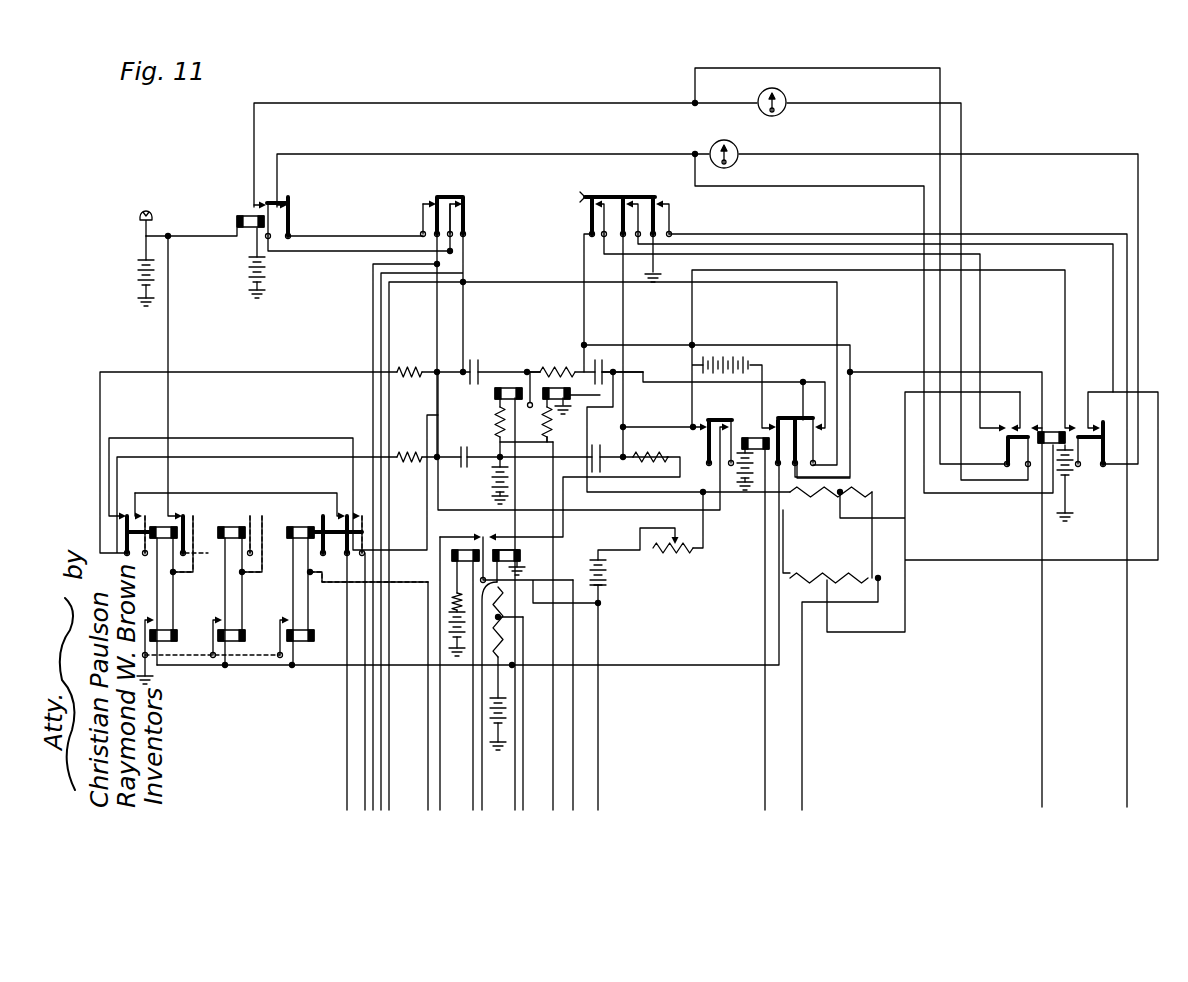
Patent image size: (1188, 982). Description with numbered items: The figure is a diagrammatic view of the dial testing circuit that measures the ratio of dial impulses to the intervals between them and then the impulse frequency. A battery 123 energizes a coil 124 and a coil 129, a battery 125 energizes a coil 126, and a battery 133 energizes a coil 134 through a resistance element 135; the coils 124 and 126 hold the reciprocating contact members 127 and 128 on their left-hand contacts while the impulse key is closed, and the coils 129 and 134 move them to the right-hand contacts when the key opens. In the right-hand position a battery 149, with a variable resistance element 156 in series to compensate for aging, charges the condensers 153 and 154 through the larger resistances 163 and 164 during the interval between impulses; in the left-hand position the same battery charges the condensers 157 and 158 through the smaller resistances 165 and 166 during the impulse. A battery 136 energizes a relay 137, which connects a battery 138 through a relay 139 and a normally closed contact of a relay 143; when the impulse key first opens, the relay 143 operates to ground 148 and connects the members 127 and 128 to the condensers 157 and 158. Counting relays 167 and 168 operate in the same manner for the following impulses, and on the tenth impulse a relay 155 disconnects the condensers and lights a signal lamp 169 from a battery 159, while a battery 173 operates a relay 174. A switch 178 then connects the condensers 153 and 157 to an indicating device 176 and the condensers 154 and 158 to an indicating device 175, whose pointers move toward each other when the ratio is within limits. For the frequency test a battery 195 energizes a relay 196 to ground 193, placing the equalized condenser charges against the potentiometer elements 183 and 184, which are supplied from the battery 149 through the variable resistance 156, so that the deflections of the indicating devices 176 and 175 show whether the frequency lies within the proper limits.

The signal lamp 169 is at (147, 207).
The battery 159 is at (140, 268).
The relay 174 is at (238, 216).
The battery 173 is at (250, 268).
The indicating device 176 is at (788, 98).
The indicating device 175 is at (713, 145).
The switch 178 is at (510, 200).
The ground 193 is at (658, 280).
The resistance 165 is at (400, 368).
The resistance 166 is at (400, 452).
The coil 124 is at (437, 390).
The reciprocating contact member 127 is at (533, 360).
The condenser 157 is at (477, 365).
The resistance 163 is at (593, 368).
The condenser 153 is at (615, 350).
The battery 138 is at (740, 352).
The coil 129 is at (600, 396).
The relay 137 is at (757, 436).
The battery 136 is at (752, 480).
The condenser 158 is at (475, 447).
The condenser 154 is at (605, 455).
The resistance 164 is at (648, 462).
The battery 123 is at (495, 484).
The relay 155 is at (163, 527).
The relay 168 is at (231, 527).
The relay 143 is at (300, 540).
The coil 126 is at (472, 527).
The reciprocating contact member 128 is at (505, 548).
The coil 134 is at (512, 552).
The variable resistance element 156 is at (685, 552).
The battery 149 is at (606, 580).
The potentiometer element 183 is at (806, 498).
The potentiometer element 184 is at (812, 575).
The relay 196 is at (1050, 447).
The battery 195 is at (1072, 470).
The ground 148 is at (153, 677).
The relay 167 is at (232, 642).
The relay 139 is at (298, 642).
The battery 125 is at (445, 622).
The resistance element 135 is at (493, 647).
The battery 133 is at (483, 712).